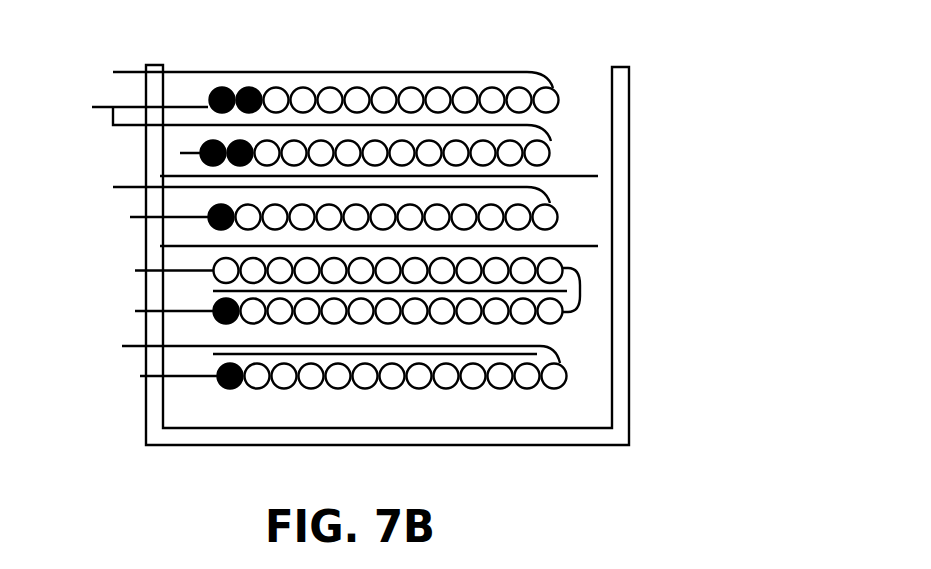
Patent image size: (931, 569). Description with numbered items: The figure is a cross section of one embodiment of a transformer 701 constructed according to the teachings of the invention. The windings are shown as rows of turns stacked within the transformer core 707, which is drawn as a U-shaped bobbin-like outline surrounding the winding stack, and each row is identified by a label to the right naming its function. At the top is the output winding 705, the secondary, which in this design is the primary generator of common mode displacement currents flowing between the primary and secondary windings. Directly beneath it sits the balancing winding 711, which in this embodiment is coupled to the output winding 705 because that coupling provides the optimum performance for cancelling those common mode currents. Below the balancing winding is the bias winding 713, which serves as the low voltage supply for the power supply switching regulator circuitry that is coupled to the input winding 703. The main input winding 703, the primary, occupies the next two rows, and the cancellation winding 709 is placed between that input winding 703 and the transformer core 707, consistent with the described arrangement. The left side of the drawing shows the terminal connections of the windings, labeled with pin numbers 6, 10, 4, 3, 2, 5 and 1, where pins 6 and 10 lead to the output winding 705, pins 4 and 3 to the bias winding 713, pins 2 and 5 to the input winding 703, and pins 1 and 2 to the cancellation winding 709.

The transformer 701 is at (695, 26).
The input winding 703 is at (737, 280).
The output winding 705 is at (738, 72).
The transformer core 707 is at (637, 428).
The cancellation winding 709 is at (780, 338).
The balancing winding 711 is at (768, 135).
The bias winding 713 is at (728, 212).
The terminal pin 1 is at (331, 348).
The terminal pin 2 is at (162, 324).
The terminal pin 3 is at (157, 217).
The terminal pin 4 is at (321, 189).
The terminal pin 5 is at (160, 311).
The terminal pin 6 is at (322, 73).
The terminal pin 10 is at (309, 117).